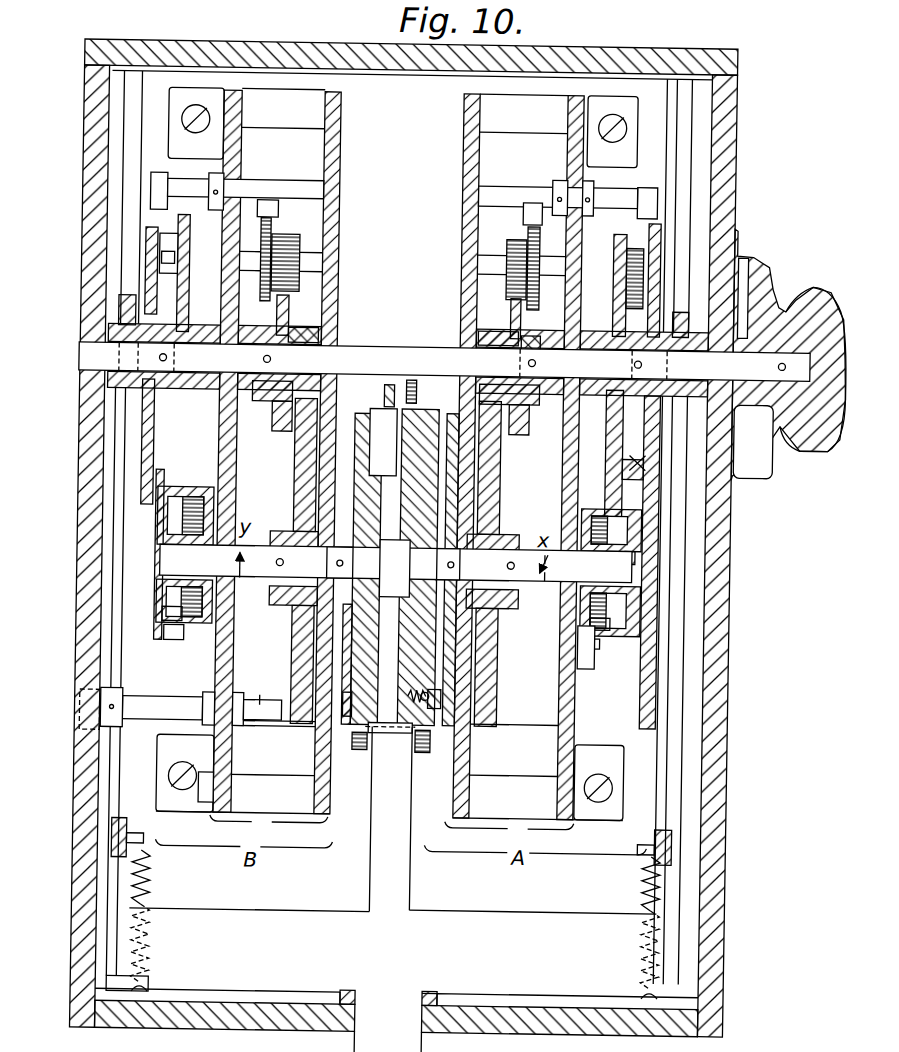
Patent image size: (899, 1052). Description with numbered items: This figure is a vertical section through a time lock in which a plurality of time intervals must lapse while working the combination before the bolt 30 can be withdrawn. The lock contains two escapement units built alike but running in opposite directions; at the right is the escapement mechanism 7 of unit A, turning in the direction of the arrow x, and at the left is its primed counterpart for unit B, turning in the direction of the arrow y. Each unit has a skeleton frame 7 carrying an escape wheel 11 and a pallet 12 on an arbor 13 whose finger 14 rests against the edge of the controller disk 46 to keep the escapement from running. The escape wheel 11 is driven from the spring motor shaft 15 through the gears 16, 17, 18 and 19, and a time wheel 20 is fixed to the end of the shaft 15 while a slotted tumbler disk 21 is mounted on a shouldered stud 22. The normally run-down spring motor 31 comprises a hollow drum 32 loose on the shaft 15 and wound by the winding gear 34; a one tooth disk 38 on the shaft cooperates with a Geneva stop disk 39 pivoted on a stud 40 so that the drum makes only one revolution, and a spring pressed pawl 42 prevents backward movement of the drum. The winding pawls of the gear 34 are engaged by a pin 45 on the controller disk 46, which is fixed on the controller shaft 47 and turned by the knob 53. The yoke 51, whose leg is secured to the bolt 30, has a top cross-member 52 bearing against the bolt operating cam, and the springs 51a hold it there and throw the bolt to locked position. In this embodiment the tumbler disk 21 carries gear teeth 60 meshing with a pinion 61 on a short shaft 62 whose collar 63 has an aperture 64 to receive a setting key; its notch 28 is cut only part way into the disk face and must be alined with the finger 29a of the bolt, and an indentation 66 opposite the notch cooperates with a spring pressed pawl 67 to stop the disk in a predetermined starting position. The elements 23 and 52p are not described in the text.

The skeleton frame (escapement mechanism) 7 is at (391, 828).
The escape wheel 11 is at (536, 330).
The pallet 12 is at (272, 197).
The arbor 13 is at (203, 248).
The finger 14 is at (153, 188).
The spring motor shaft 15 is at (396, 563).
The gear 16 is at (312, 480).
The gear 17 is at (300, 330).
The gear 18 is at (284, 412).
The gear 19 is at (292, 232).
The time wheel 20 is at (445, 660).
The slotted tumbler disk 21 is at (430, 640).
The shouldered stud 22 is at (393, 568).
The spring detent 23 is at (434, 690).
The notch 28 is at (373, 566).
The finger of the bolt 29a is at (391, 820).
The bolt 30 is at (386, 968).
The spring motor 31 is at (204, 640).
The hollow drum 32 is at (168, 510).
The winding gear 34 is at (190, 470).
The one tooth disk 38 is at (168, 545).
The Geneva stop disk 39 is at (170, 620).
The stud 40 is at (168, 600).
The spring pressed pawl 42 is at (600, 655).
The pin 45 is at (163, 262).
The controller disk 46 is at (149, 232).
The controller shaft 47 is at (444, 361).
The yoke 51 is at (122, 780).
The spring 51a is at (395, 924).
The cross-member 52 is at (748, 262).
The boss 52p is at (123, 300).
The knob 53 is at (822, 280).
The gear teeth 60 is at (452, 700).
The pinion 61 is at (350, 745).
The short shaft 62 is at (262, 689).
The collar 63 is at (100, 690).
The aperture 64 is at (125, 732).
The indentation 66 is at (395, 730).
The spring pressed pawl 67 is at (392, 382).